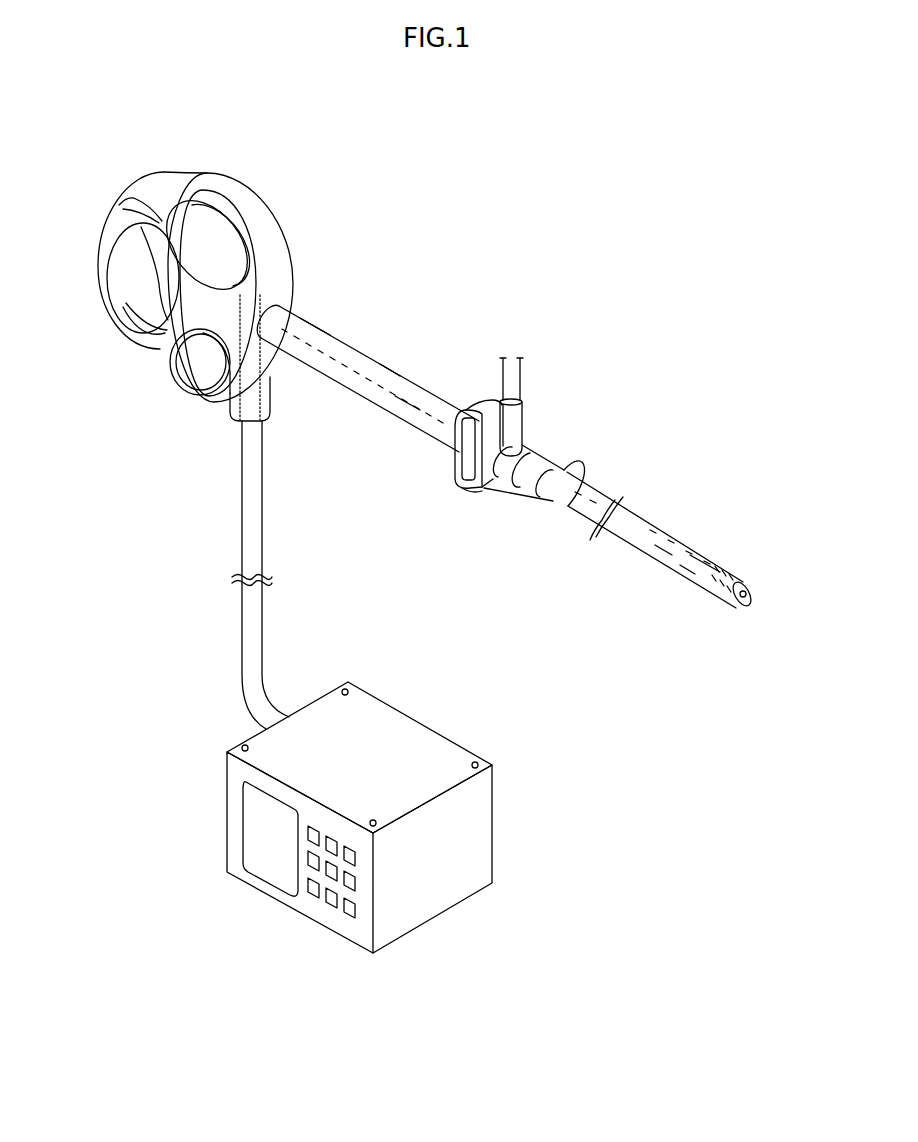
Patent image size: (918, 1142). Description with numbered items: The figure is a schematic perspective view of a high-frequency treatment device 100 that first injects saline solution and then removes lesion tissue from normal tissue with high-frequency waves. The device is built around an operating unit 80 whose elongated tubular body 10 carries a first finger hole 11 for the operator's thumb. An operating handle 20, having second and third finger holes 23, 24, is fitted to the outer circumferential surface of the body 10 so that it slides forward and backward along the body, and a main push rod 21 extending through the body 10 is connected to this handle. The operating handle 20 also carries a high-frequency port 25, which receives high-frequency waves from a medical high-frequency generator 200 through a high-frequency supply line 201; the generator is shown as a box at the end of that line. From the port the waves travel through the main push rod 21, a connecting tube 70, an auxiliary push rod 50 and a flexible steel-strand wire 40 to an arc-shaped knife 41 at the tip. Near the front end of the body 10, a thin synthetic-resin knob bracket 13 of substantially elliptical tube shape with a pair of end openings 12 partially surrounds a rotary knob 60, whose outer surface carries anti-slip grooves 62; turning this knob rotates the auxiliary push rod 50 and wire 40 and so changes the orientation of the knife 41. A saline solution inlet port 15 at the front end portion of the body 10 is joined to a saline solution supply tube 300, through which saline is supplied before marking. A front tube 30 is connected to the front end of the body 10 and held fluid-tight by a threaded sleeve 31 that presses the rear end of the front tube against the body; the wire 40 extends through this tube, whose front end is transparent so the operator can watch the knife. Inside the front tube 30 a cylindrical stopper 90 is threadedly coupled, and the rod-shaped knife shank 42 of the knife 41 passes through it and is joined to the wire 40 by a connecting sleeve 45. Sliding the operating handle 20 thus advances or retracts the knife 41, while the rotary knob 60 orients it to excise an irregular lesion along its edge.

The high-frequency treatment device 100 is at (504, 284).
The body 10 is at (341, 337).
The first finger hole 11 is at (134, 267).
The end openings 12 is at (483, 495).
The knob bracket 13 is at (493, 400).
The saline solution inlet port 15 is at (523, 423).
The operating handle 20 is at (255, 193).
The main push rod 21 is at (310, 327).
The second finger hole 23 is at (204, 246).
The third finger hole 24 is at (200, 367).
The high-frequency port 25 is at (269, 405).
The front tube 30 is at (688, 548).
The sleeve 31 is at (562, 466).
The wire 40 is at (640, 531).
The knife 41 is at (752, 595).
The knife shank 42 is at (688, 580).
The connecting sleeve 45 is at (668, 562).
The auxiliary push rod 50 is at (410, 410).
The rotary knob 60 is at (449, 462).
The anti-slip grooves 62 is at (463, 478).
The connecting tube 70 is at (394, 383).
The operating unit 80 is at (392, 318).
The stopper 90 is at (718, 570).
The high-frequency generator 200 is at (388, 713).
The high-frequency supply line 201 is at (244, 527).
The saline solution supply tube 300 is at (521, 368).